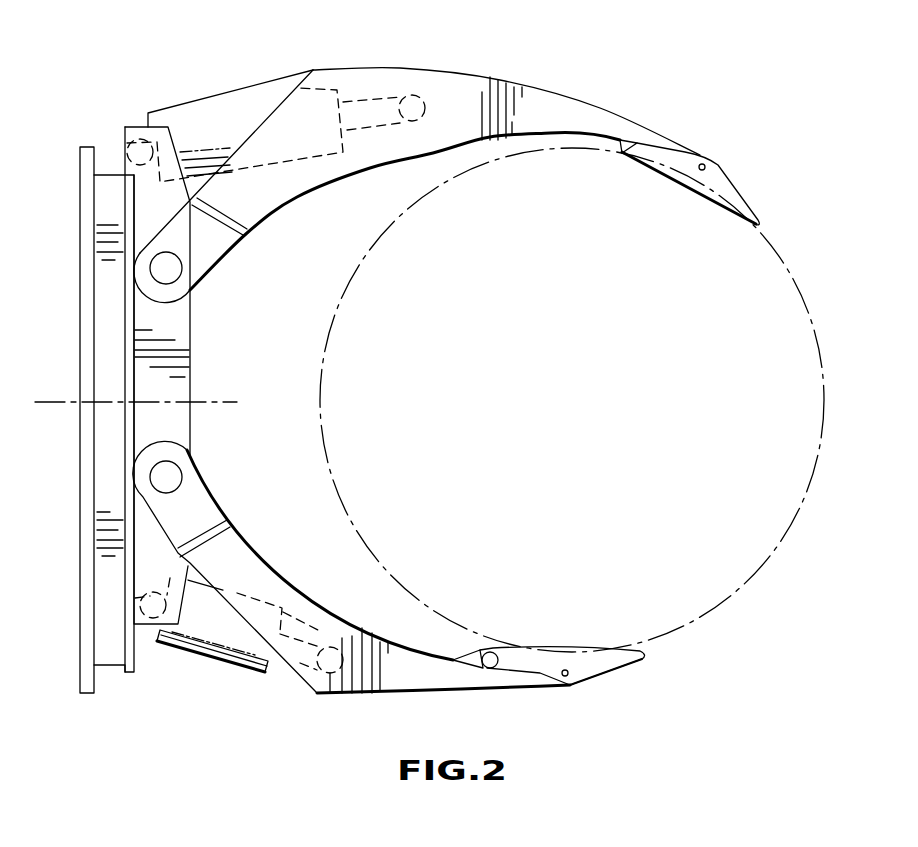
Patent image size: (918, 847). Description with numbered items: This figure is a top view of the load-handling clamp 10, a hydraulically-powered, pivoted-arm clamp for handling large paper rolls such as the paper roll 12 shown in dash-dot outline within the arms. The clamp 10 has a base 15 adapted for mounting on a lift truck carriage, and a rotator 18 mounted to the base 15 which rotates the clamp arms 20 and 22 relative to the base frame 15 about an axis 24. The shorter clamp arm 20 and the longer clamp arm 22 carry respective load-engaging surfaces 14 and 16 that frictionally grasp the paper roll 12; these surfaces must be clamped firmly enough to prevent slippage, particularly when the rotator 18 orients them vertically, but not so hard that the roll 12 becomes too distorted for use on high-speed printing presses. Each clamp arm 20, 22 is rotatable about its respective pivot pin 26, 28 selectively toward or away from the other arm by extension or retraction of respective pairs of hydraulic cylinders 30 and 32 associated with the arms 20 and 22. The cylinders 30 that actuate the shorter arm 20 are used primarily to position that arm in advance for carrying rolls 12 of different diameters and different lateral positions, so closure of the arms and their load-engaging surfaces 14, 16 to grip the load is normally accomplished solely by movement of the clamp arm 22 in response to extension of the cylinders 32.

The load-handling clamp 10 is at (643, 82).
The paper roll 12 is at (800, 275).
The load-engaging surface 14 is at (533, 655).
The base 15 is at (80, 228).
The load-engaging surface 16 is at (733, 208).
The rotator 18 is at (109, 175).
The clamp arm 20 is at (397, 693).
The clamp arm 22 is at (540, 80).
The axis 24 is at (52, 400).
The pivot pin 26 is at (170, 472).
The pivot pin 28 is at (170, 272).
The hydraulic cylinders 30 is at (210, 662).
The hydraulic cylinders 32 is at (222, 93).